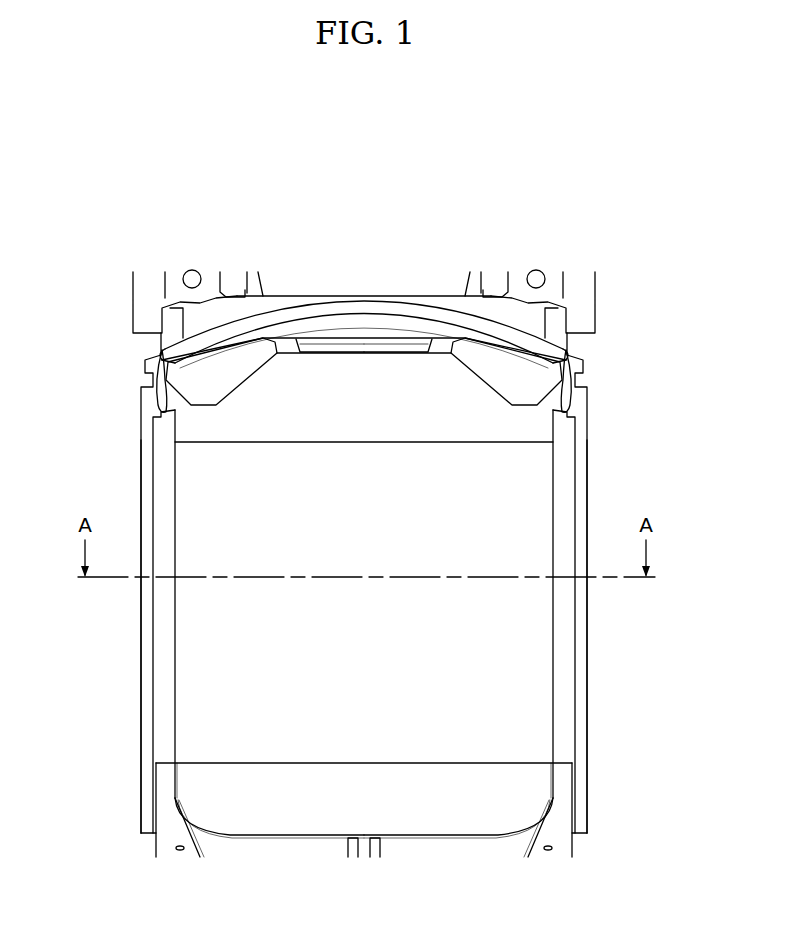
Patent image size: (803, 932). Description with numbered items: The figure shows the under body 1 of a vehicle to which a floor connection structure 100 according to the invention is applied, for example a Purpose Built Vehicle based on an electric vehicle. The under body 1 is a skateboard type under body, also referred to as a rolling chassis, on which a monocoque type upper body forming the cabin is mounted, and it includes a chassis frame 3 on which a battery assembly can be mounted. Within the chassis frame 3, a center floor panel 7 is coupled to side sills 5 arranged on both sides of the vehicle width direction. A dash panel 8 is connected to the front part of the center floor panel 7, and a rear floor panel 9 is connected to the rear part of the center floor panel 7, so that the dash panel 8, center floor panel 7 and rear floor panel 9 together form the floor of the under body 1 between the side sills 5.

The under body 1 is at (364, 235).
The chassis frame 3 is at (603, 477).
The side sill 5 is at (141, 483).
The center floor panel 7 is at (535, 700).
The dash panel 8 is at (392, 398).
The rear floor panel 9 is at (440, 800).
The floor connection structure 100 is at (338, 428).